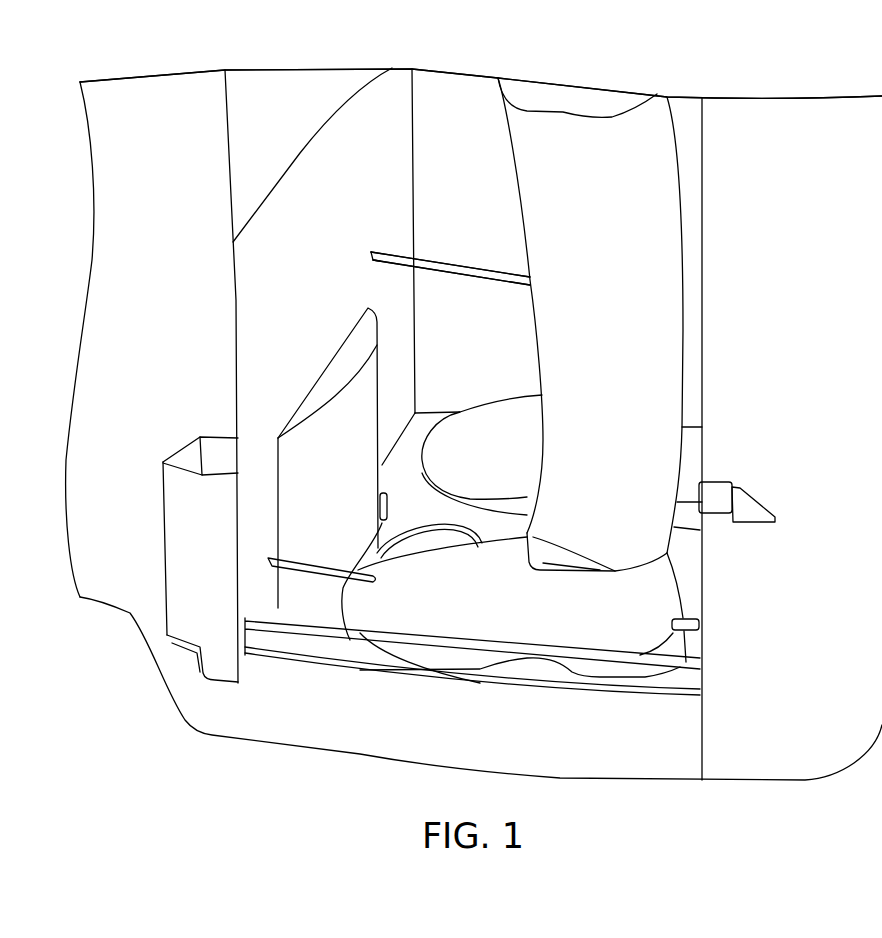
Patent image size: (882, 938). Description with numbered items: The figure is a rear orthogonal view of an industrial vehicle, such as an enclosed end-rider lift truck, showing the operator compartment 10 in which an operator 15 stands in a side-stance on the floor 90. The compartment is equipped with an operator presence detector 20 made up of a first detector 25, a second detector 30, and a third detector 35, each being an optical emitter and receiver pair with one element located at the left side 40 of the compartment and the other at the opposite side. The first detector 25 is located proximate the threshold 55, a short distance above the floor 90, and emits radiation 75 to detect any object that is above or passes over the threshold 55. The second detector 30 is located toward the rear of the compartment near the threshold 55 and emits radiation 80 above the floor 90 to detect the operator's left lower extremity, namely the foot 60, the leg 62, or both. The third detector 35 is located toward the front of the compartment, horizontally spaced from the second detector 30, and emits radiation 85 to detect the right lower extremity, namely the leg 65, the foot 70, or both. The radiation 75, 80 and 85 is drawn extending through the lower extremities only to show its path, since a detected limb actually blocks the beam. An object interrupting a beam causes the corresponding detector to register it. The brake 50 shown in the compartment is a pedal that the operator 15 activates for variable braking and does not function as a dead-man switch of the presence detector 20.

The operator compartment 10 is at (245, 163).
The operator 15 is at (667, 284).
The operator presence detector 20 is at (344, 255).
The first detector 25 is at (340, 571).
The second detector 30 is at (262, 562).
The third detector 35 is at (368, 251).
The left side 40 is at (386, 90).
The brake 50 is at (453, 538).
The threshold 55 is at (308, 657).
The foot 60 is at (423, 603).
The leg 62 is at (670, 402).
The leg 65 is at (685, 112).
The foot 70 is at (483, 477).
The radiation 75 is at (350, 640).
The radiation 80 is at (310, 567).
The radiation 85 is at (465, 268).
The floor 90 is at (690, 575).